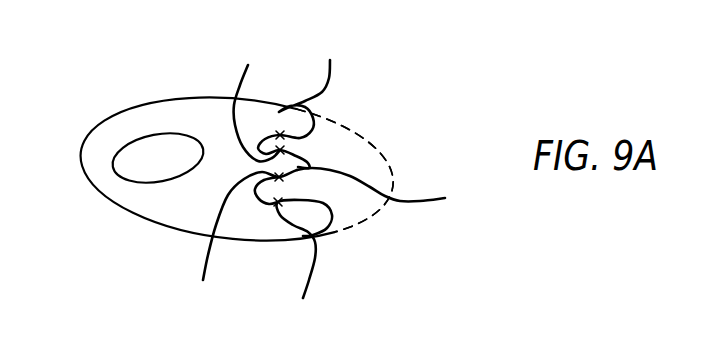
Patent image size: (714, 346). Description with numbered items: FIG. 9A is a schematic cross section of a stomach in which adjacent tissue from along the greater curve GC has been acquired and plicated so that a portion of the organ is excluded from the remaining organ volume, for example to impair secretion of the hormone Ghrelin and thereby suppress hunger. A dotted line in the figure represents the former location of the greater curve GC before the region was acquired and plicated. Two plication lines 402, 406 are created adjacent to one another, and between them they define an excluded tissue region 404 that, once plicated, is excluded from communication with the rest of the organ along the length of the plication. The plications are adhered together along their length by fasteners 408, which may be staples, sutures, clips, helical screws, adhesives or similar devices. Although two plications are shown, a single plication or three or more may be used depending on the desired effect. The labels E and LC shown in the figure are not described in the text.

The electrode E is at (113, 167).
The lumen / central opening of electrode LC is at (108, 198).
The greater curve of the stomach GC is at (388, 160).
The plication line 402 is at (303, 262).
The excluded tissue region 404 is at (369, 189).
The plication line 406 is at (259, 102).
The fasteners 408 is at (265, 172).